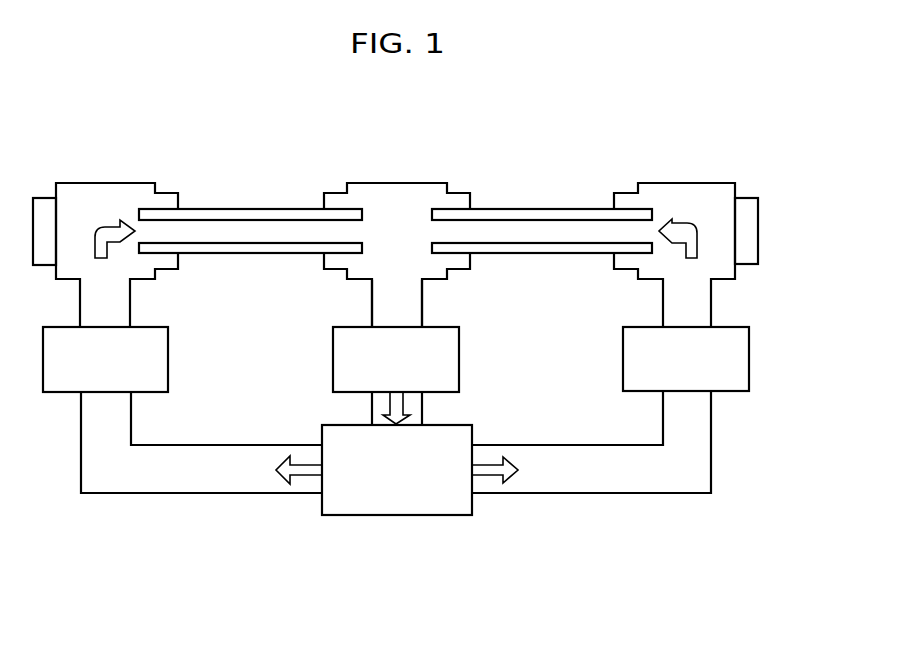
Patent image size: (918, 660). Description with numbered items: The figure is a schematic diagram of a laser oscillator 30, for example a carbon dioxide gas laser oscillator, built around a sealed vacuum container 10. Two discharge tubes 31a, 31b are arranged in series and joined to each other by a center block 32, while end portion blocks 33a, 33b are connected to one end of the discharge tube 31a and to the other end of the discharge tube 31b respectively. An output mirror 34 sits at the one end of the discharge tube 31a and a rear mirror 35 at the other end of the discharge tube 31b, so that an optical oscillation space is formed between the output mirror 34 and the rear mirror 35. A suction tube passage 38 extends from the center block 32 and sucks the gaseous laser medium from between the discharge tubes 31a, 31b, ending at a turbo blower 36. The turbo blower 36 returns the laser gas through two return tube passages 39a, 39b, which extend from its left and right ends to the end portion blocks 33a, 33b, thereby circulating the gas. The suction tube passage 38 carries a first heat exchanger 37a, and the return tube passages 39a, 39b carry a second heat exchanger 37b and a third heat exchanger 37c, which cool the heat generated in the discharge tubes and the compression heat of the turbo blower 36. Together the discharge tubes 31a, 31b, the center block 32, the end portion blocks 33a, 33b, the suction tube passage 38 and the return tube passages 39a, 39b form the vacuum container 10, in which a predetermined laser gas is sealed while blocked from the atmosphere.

The vacuum container 10 is at (725, 472).
The laser oscillator 30 is at (466, 133).
The discharge tube 31a is at (263, 208).
The discharge tube 31b is at (560, 207).
The center block 32 is at (388, 183).
The end portion block 33a is at (100, 197).
The end portion block 33b is at (695, 182).
The output mirror 34 is at (50, 208).
The rear mirror 35 is at (752, 233).
The turbo blower 36 is at (462, 505).
The first heat exchanger 37a is at (442, 357).
The second heat exchanger 37b is at (158, 371).
The third heat exchanger 37c is at (738, 359).
The suction tube passage 38 is at (403, 307).
The return tube passage 39a is at (188, 482).
The return tube passage 39b is at (667, 478).